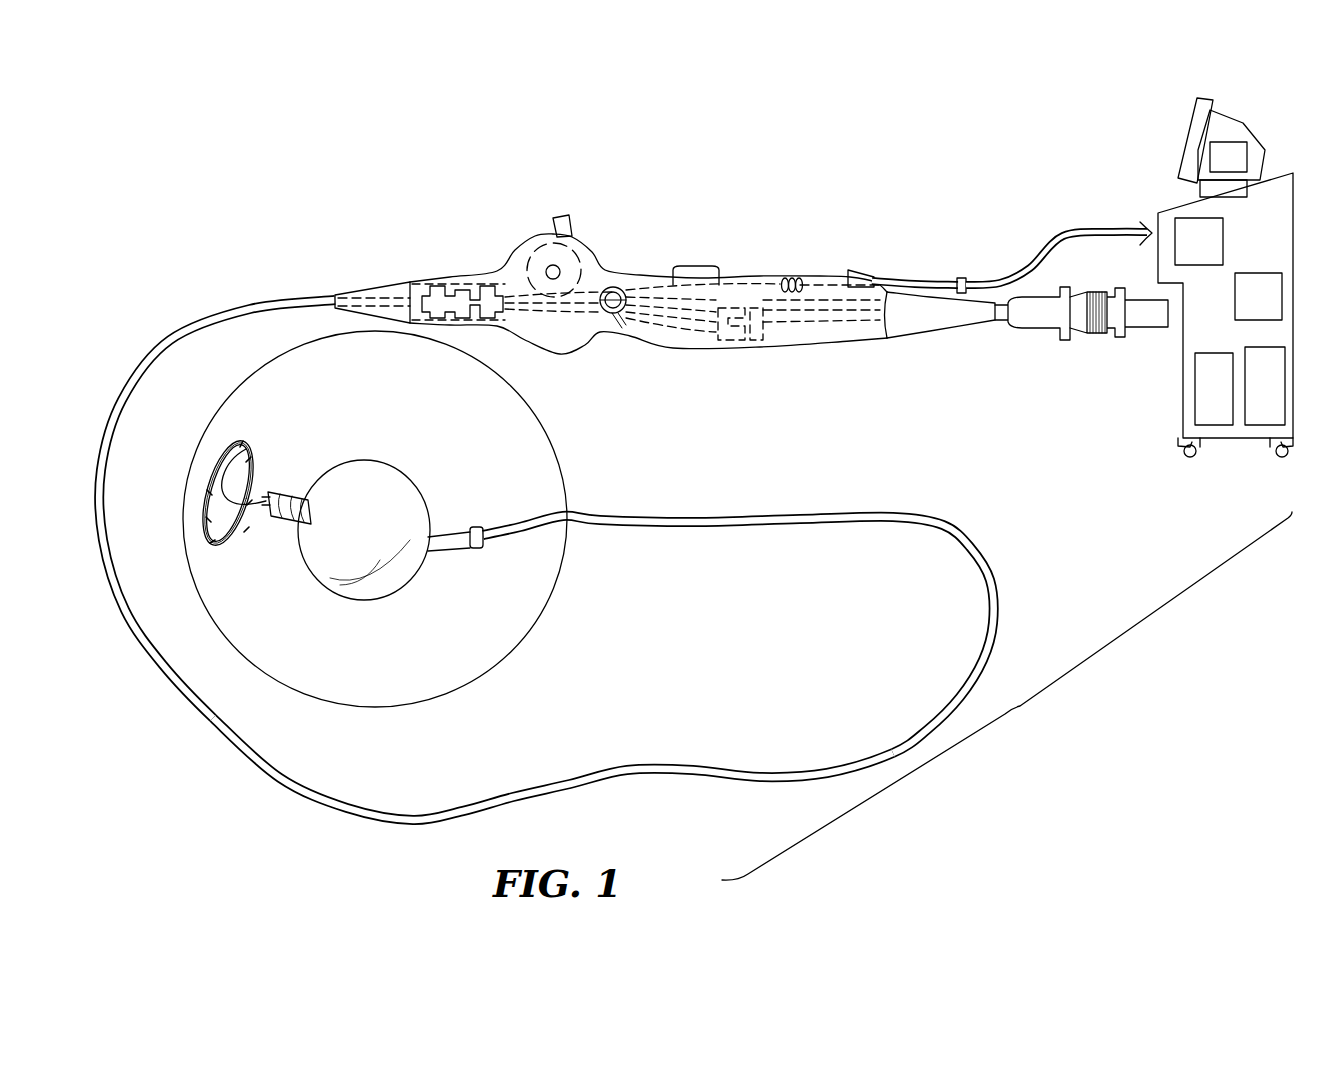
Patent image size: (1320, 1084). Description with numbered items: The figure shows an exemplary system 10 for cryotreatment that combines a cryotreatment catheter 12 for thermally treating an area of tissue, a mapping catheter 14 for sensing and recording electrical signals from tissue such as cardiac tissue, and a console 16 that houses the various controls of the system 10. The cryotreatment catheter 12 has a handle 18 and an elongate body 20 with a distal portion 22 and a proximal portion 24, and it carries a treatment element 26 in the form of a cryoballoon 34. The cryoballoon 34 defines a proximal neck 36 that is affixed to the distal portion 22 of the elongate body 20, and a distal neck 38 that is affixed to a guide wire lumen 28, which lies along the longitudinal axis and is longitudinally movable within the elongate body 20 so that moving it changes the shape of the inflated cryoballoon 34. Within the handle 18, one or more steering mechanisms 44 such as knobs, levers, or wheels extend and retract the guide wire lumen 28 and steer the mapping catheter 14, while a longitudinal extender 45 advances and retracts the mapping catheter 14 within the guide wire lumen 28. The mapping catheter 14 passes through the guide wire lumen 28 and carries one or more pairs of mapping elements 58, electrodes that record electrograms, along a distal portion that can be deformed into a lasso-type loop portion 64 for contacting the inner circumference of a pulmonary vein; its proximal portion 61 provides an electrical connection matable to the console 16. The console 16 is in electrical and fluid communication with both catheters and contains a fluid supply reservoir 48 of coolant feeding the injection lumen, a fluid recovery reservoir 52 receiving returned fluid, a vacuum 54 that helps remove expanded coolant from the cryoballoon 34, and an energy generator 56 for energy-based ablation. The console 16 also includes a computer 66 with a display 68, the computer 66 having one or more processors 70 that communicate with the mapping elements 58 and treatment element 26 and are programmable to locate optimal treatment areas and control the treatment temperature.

The system 10 is at (1007, 696).
The cryotreatment catheter 12 is at (331, 133).
The mapping catheter 14 is at (252, 468).
The console 16 is at (1225, 315).
The handle 18 is at (751, 320).
The elongate body 20 is at (530, 769).
The distal portion 22 is at (738, 603).
The proximal portion 24 is at (217, 492).
The treatment element 26 is at (364, 497).
The guide wire lumen 28 is at (250, 543).
The cryoballoon 34 is at (347, 594).
The proximal neck 36 is at (455, 580).
The distal neck 38 is at (293, 473).
The steering mechanism 44 is at (584, 228).
The longitudinal extender 45 is at (719, 243).
The fluid supply reservoir 48 is at (1214, 389).
The fluid recovery reservoir 52 is at (1265, 386).
The vacuum 54 is at (1199, 241).
The energy generator 56 is at (1258, 296).
The mapping elements 58 is at (188, 492).
The proximal portion 61 is at (1012, 254).
The loop portion 64 is at (204, 471).
The computer 66 is at (1235, 134).
The display 68 is at (1161, 140).
The processor 70 is at (1228, 157).